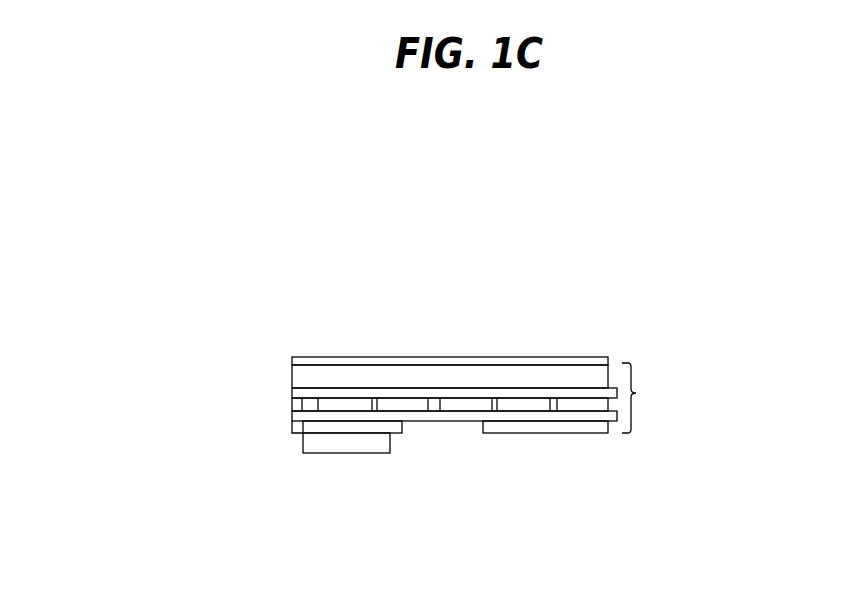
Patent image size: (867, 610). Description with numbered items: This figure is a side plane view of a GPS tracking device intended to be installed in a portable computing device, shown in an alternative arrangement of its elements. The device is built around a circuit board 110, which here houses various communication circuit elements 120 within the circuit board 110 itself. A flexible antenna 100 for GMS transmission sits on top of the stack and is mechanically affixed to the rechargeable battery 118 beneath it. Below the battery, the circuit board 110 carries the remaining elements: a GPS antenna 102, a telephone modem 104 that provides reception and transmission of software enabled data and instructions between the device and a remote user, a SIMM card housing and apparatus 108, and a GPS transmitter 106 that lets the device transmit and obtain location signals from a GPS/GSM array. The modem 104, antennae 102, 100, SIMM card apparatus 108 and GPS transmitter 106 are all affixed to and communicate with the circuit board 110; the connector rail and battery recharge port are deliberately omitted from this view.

The flexible antenna 100 is at (456, 332).
The rechargeable battery 118 is at (291, 369).
The circuit board 110 is at (291, 413).
The GPS antenna 102 is at (291, 431).
The telephone modem 104 is at (399, 434).
The SIMM card housing and apparatus 108 is at (563, 434).
The GPS transmitter 106 is at (325, 455).
The communication circuit elements 120 is at (700, 403).